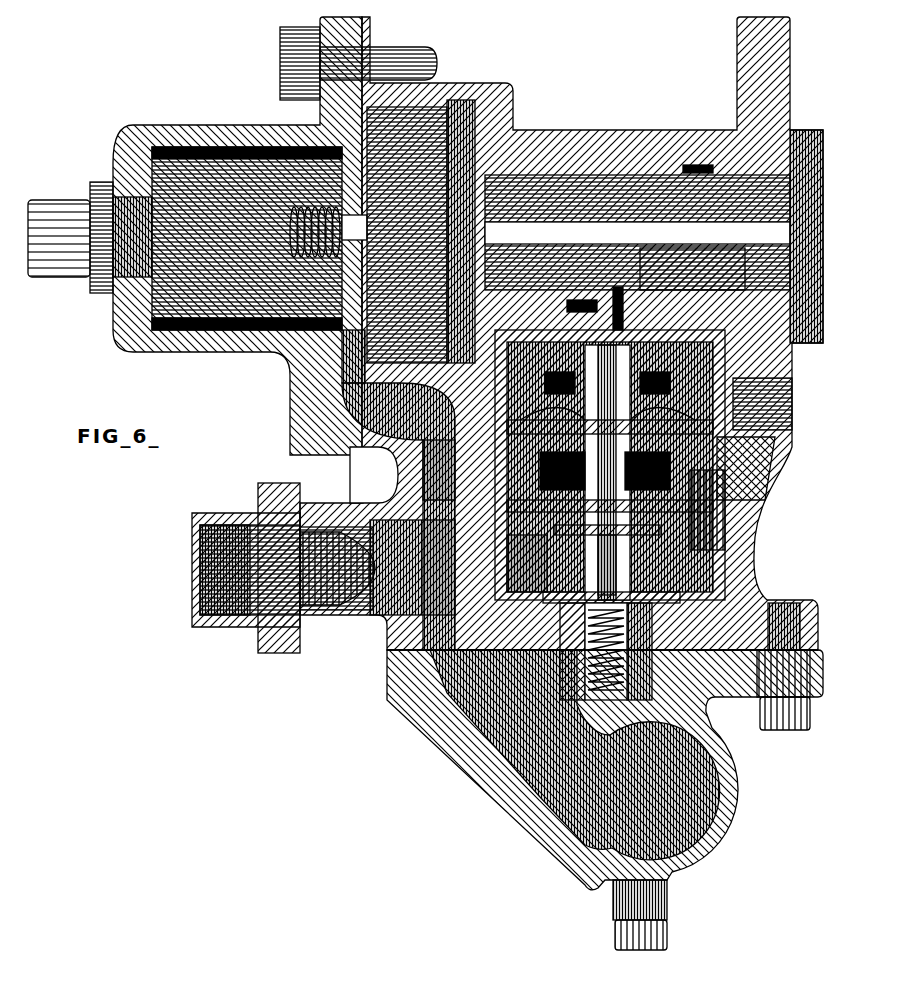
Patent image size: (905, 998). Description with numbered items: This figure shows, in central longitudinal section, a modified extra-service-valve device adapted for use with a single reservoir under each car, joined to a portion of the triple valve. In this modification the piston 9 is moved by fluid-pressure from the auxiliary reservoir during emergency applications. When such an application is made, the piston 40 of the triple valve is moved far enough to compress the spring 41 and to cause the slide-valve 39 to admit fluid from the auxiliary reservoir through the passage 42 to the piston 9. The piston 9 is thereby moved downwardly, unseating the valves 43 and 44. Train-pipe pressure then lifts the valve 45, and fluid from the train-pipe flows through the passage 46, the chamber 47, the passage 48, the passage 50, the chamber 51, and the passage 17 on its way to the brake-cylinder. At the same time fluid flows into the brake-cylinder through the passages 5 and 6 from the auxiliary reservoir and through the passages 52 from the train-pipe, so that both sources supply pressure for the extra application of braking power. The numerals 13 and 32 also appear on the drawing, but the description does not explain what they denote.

The passage 5 is at (561, 333).
The passage 6 is at (790, 410).
The piston 9 is at (690, 350).
The mixing passage 13 is at (746, 468).
The passage 17 is at (635, 372).
The fuel channel 32 is at (505, 432).
The slide-valve 39 is at (688, 262).
The piston 40 is at (455, 282).
The spring 41 is at (332, 262).
The passage 42 is at (618, 305).
The valve 43 is at (650, 455).
The valve 44 is at (645, 545).
The valve 45 is at (670, 572).
The passage 46 is at (652, 686).
The chamber 47 is at (585, 565).
The passage 48 is at (638, 514).
The passage 50 is at (635, 428).
The chamber 51 is at (650, 405).
The passages 52 is at (690, 483).